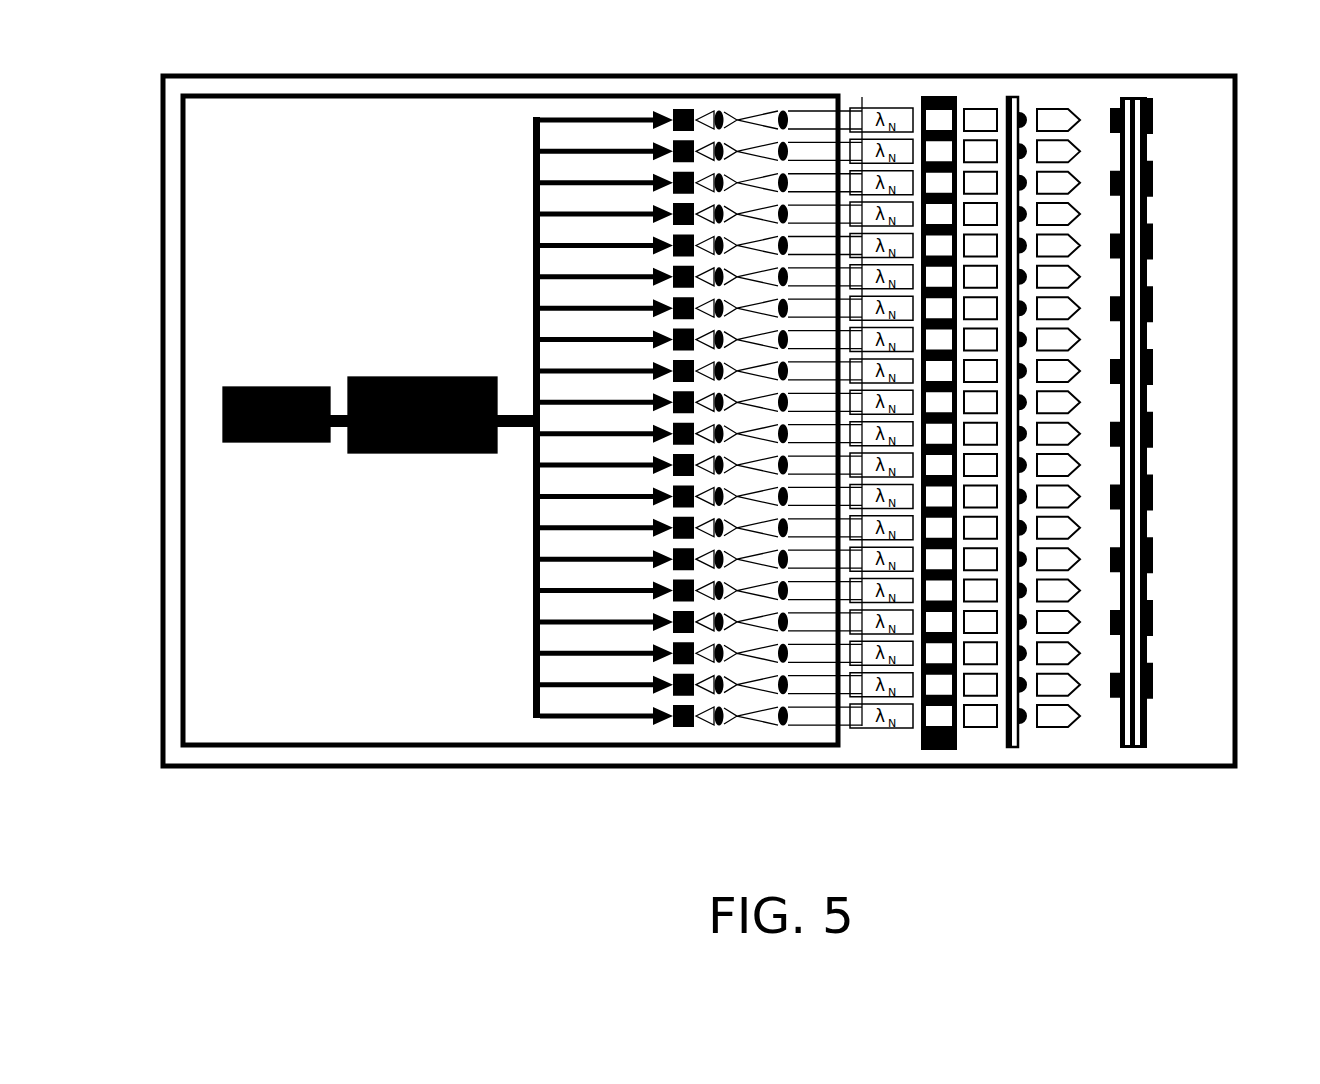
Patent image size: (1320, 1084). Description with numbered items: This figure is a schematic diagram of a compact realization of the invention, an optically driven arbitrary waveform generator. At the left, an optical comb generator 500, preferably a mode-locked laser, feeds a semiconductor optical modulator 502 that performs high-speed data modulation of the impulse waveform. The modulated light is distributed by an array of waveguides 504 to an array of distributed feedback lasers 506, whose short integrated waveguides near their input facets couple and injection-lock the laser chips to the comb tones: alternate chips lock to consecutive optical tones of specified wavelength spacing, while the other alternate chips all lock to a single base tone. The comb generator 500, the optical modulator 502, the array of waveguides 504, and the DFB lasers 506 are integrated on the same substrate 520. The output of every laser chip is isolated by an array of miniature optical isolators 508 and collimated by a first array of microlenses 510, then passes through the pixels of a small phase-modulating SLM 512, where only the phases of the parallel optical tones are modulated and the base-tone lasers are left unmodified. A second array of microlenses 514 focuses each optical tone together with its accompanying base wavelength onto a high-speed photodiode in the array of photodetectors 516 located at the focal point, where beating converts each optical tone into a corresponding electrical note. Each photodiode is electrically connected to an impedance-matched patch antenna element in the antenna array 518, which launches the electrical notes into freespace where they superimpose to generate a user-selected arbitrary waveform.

The optical comb generator 500 is at (245, 387).
The semiconductor optical modulator 502 is at (360, 377).
The array of waveguides 504 is at (532, 628).
The array of distributed feedback (DFB) lasers 506 is at (683, 728).
The array of miniature optical isolators 508 is at (718, 727).
The first array of microlenses 510 is at (781, 726).
The phase-modulating SLM 512 is at (920, 750).
The second array of microlenses 514 is at (1018, 736).
The array of photodetectors 516 is at (1113, 700).
The antenna array 518 is at (1143, 708).
The substrate 520 is at (242, 720).